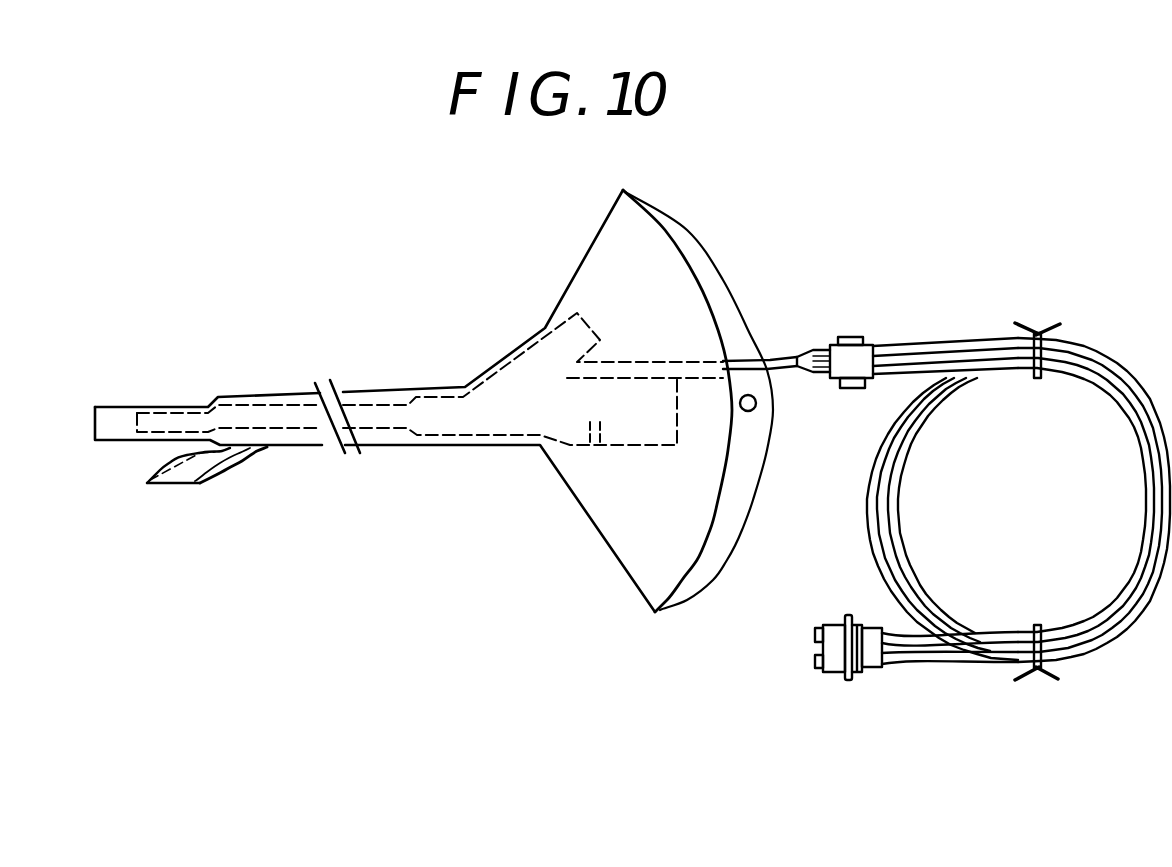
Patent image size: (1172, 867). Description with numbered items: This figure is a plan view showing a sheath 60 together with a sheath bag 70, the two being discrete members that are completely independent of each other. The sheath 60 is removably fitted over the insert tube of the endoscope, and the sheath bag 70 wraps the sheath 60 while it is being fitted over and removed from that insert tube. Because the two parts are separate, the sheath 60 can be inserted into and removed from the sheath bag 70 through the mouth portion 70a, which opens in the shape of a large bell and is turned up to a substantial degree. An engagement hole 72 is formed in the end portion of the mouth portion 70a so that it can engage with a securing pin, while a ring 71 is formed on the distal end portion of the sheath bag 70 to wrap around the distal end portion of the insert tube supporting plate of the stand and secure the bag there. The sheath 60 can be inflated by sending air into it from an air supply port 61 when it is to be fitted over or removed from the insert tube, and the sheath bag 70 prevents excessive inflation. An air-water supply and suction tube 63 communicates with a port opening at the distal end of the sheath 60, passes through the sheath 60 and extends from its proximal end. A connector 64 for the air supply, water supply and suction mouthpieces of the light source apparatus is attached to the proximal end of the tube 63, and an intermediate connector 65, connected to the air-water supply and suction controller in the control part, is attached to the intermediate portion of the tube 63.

The sheath bag 70 is at (237, 395).
The mouth portion 70a is at (714, 280).
The sheath 60 is at (395, 426).
The air supply port 61 is at (594, 447).
The ring 71 is at (183, 474).
The engagement hole 72 is at (757, 407).
The intermediate connector 65 is at (853, 340).
The air-water supply and suction tube 63 is at (935, 352).
The connector 64 is at (833, 672).